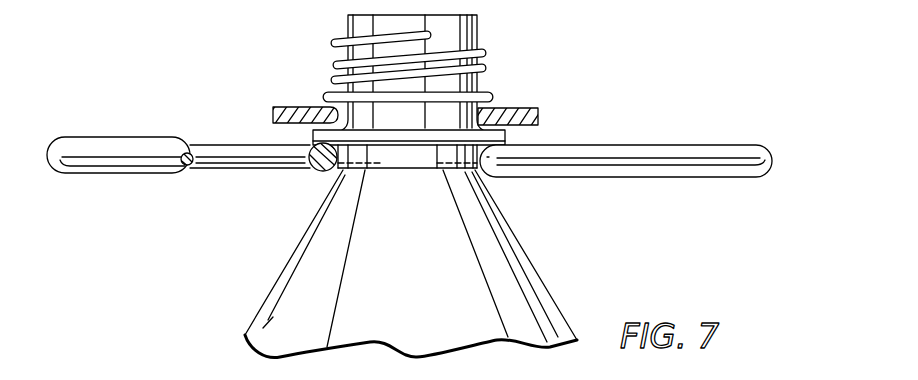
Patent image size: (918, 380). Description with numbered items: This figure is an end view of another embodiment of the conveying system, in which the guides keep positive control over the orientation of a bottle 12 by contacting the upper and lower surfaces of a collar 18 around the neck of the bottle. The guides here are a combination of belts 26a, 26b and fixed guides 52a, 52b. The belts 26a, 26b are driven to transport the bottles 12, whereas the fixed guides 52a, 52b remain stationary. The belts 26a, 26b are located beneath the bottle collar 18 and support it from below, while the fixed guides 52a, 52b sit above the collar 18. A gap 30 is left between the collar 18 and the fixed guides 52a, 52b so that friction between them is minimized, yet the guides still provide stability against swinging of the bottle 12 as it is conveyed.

The bottle 12 is at (530, 262).
The bottle collar 18 is at (412, 147).
The gap 30 is at (493, 130).
The fixed guide 52a is at (288, 107).
The fixed guide 52b is at (540, 108).
The belt 26a is at (92, 137).
The belt 26b is at (775, 157).